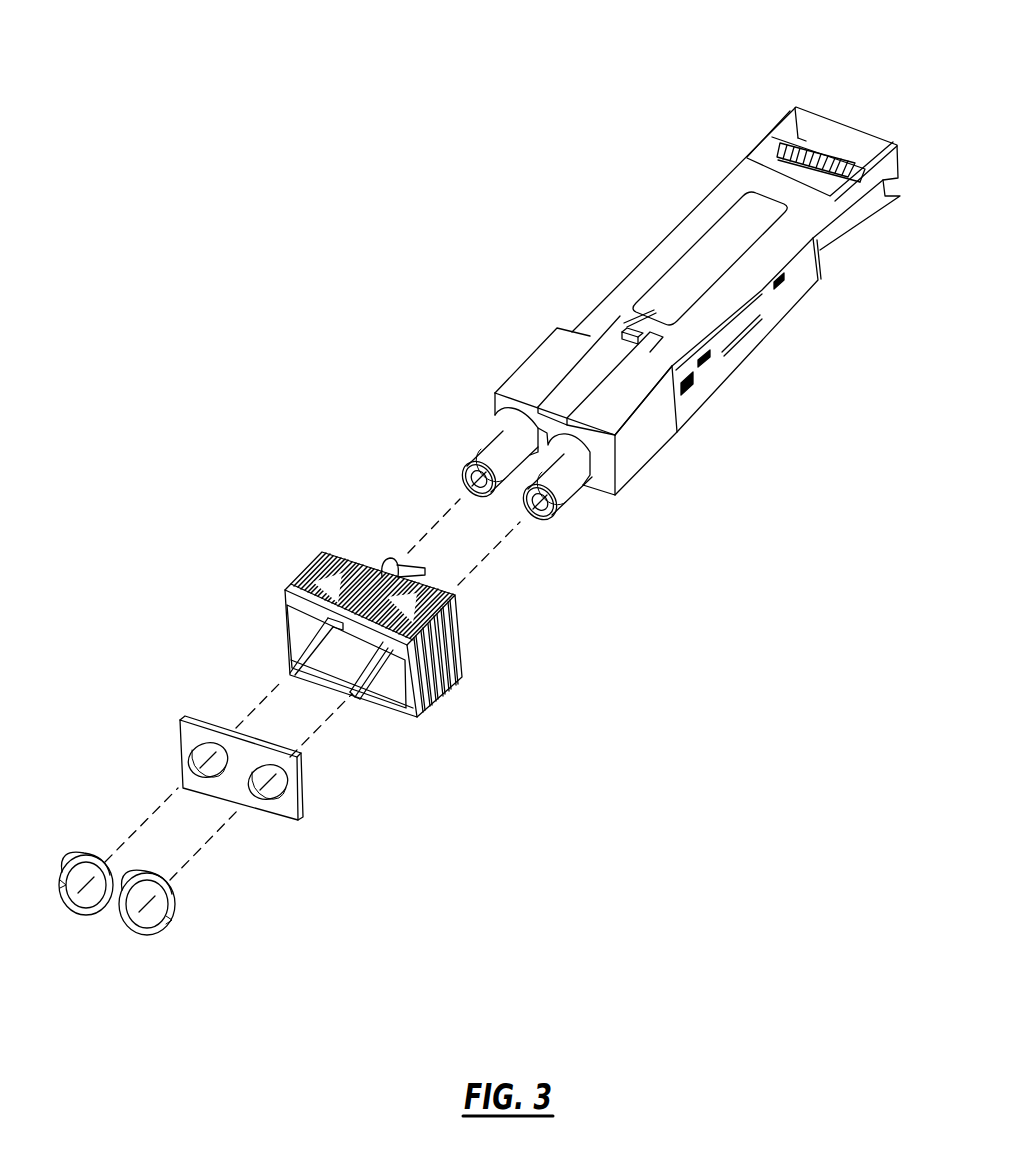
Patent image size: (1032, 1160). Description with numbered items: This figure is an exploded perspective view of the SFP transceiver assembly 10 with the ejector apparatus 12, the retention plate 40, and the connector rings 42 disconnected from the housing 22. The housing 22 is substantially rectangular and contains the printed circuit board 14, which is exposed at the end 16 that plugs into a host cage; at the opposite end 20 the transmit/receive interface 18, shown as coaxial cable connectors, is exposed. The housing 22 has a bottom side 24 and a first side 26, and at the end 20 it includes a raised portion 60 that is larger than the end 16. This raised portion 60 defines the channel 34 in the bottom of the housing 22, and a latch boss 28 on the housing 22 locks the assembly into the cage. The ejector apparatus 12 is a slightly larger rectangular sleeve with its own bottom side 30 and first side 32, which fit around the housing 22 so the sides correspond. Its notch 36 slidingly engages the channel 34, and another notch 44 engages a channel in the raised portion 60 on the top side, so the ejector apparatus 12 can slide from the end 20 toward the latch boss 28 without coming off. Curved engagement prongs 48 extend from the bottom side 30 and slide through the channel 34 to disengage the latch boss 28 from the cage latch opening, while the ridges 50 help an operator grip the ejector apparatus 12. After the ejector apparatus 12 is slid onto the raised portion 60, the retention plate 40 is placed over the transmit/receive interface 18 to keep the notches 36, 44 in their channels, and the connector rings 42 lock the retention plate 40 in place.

The SFP transceiver assembly 10 is at (263, 192).
The ejector apparatus 12 is at (371, 649).
The printed circuit board 14 is at (818, 163).
The end 16 is at (793, 100).
The transmit/receive interface 18 is at (562, 519).
The end 20 is at (593, 451).
The housing 22 is at (723, 223).
The bottom side 24 is at (697, 218).
The first side 26 is at (738, 343).
The latch boss 28 is at (626, 330).
The bottom side 30 is at (342, 560).
The first side 32 is at (452, 633).
The channel 34 is at (588, 383).
The notch 36 is at (331, 640).
The retention plate 40 is at (183, 720).
The interface connector rings 42 is at (180, 910).
The notch 44 is at (368, 688).
The engagement prongs 48 is at (390, 570).
The ridges 50 is at (304, 596).
The raised portion 60 is at (660, 428).